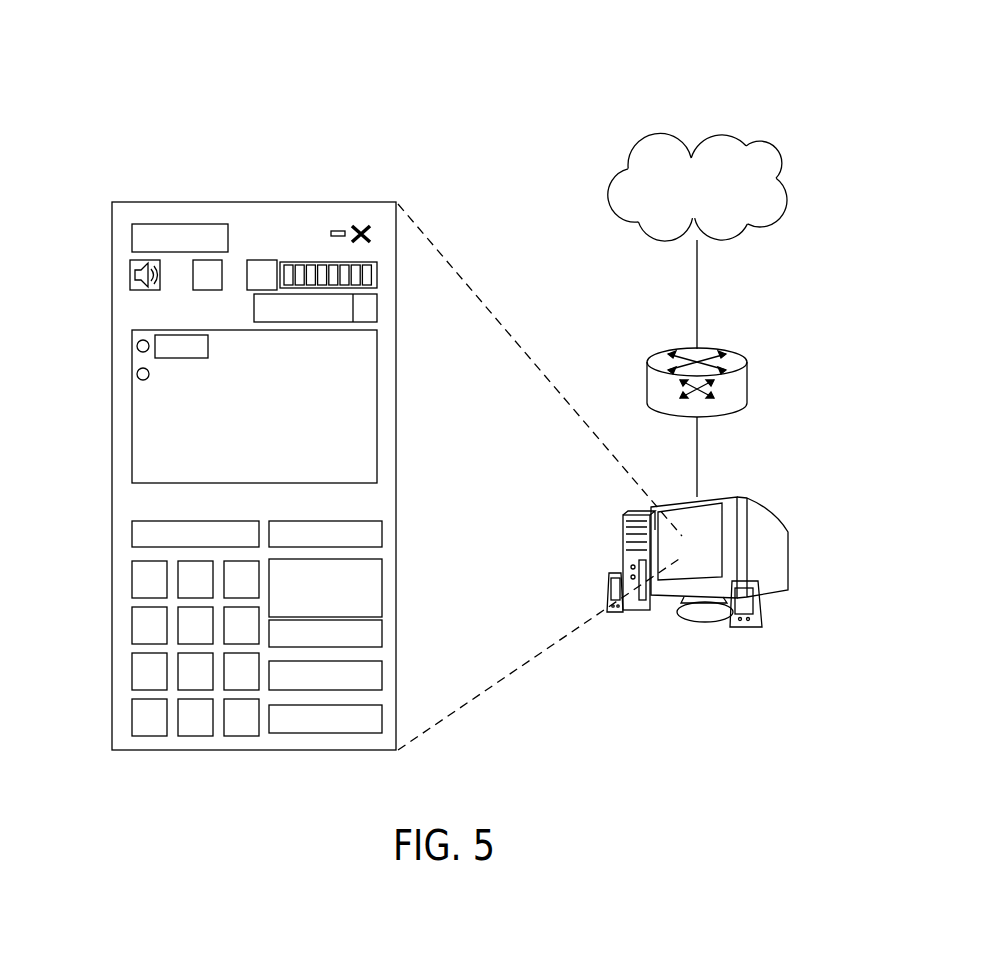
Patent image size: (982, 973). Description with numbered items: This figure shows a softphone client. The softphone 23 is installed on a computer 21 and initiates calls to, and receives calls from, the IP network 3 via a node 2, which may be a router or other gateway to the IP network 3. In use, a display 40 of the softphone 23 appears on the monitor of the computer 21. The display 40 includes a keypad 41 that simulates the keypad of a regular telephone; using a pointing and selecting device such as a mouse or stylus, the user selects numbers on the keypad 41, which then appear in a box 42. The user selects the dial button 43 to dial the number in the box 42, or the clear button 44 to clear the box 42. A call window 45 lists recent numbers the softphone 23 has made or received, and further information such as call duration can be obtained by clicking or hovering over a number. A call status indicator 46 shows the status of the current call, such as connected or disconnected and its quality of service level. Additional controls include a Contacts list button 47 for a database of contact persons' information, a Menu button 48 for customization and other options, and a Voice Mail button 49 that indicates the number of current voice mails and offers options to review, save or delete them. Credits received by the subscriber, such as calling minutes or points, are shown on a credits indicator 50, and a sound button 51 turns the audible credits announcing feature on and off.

The softphone 23 is at (119, 100).
The display 40 is at (226, 202).
The Menu button 48 is at (131, 243).
The sound button 51 is at (121, 274).
The call status indicator 46 is at (320, 262).
The call window 45 is at (131, 357).
The box 42 is at (137, 532).
The Contacts list button 47 is at (375, 525).
The keypad 41 is at (135, 648).
The credits indicator 50 is at (372, 578).
The Voice Mail button 49 is at (383, 629).
The dial button 43 is at (375, 671).
The clear button 44 is at (362, 723).
The IP network 3 is at (723, 134).
The node 2 is at (747, 383).
The computer 21 is at (779, 553).